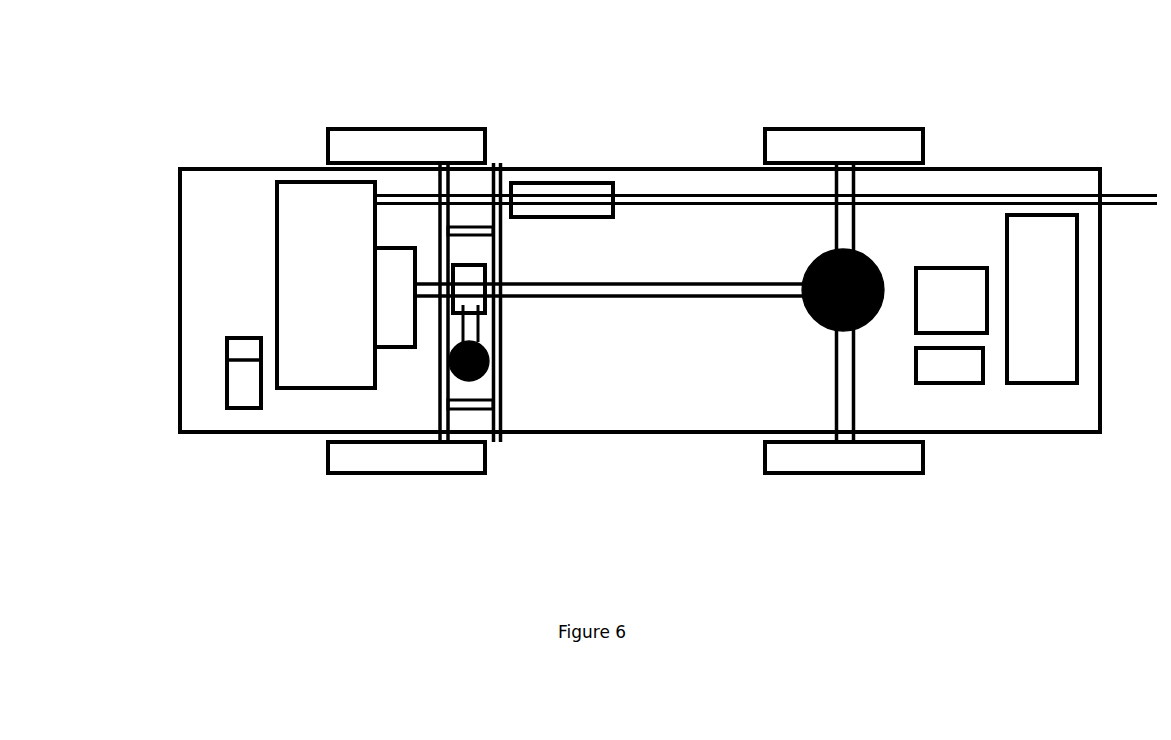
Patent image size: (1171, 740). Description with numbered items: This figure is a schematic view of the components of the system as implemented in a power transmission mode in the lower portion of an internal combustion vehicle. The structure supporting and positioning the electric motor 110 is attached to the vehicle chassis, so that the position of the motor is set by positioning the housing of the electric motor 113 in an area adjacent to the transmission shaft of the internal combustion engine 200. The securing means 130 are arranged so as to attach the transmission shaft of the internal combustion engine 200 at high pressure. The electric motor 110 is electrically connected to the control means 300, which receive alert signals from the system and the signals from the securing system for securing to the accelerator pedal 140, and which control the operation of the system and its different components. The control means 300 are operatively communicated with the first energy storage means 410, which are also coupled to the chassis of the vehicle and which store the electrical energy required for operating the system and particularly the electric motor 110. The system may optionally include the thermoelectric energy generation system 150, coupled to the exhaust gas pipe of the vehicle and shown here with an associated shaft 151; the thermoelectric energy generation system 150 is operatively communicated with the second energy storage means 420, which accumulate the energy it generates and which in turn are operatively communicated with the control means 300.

The electric motor 110 is at (437, 375).
The housing of the electric motor 113 is at (469, 383).
The securing means 130 is at (487, 312).
The accelerator pedal 140 is at (220, 402).
The thermoelectric energy generation system 150 is at (593, 183).
The drive shaft 151 is at (665, 192).
The transmission shaft of the internal combustion engine 200 is at (575, 303).
The control means 300 is at (987, 300).
The first energy storage means 410 is at (1033, 213).
The second energy storage means 420 is at (967, 385).